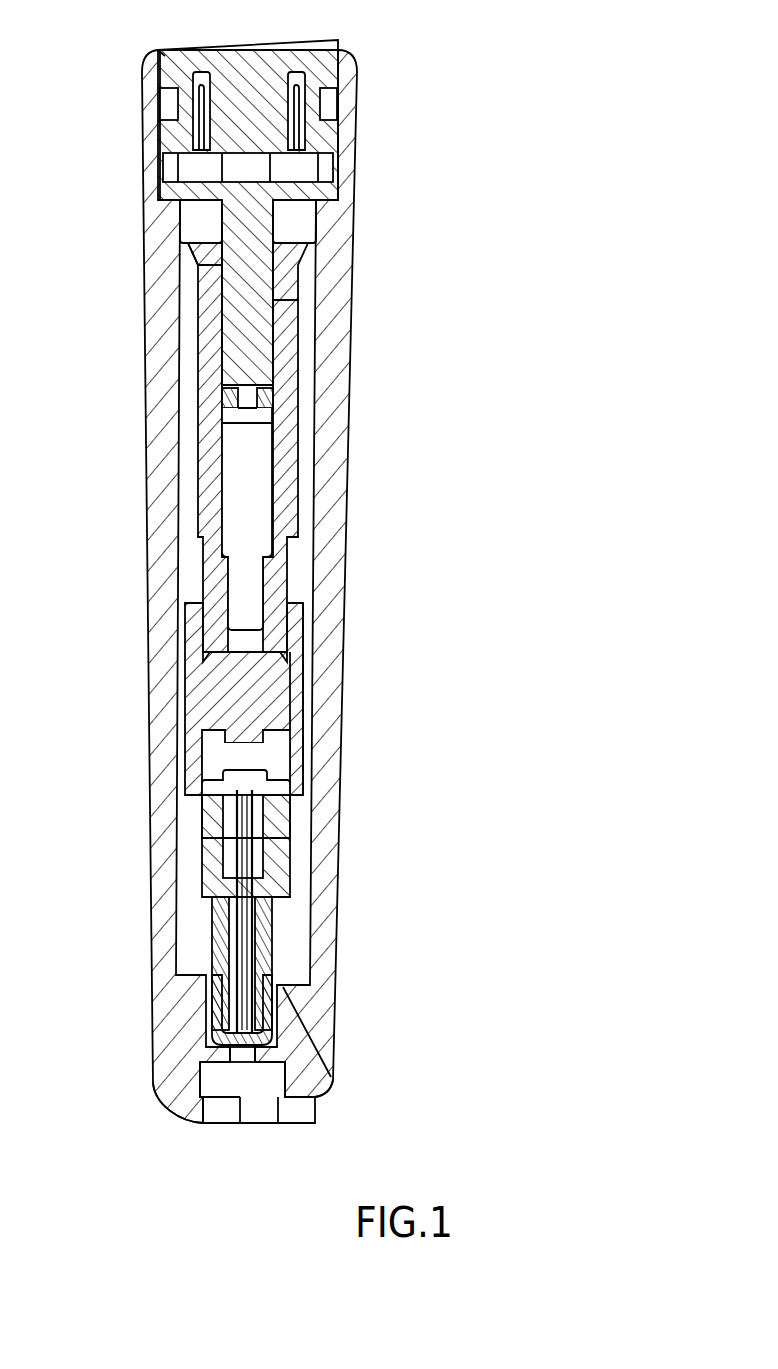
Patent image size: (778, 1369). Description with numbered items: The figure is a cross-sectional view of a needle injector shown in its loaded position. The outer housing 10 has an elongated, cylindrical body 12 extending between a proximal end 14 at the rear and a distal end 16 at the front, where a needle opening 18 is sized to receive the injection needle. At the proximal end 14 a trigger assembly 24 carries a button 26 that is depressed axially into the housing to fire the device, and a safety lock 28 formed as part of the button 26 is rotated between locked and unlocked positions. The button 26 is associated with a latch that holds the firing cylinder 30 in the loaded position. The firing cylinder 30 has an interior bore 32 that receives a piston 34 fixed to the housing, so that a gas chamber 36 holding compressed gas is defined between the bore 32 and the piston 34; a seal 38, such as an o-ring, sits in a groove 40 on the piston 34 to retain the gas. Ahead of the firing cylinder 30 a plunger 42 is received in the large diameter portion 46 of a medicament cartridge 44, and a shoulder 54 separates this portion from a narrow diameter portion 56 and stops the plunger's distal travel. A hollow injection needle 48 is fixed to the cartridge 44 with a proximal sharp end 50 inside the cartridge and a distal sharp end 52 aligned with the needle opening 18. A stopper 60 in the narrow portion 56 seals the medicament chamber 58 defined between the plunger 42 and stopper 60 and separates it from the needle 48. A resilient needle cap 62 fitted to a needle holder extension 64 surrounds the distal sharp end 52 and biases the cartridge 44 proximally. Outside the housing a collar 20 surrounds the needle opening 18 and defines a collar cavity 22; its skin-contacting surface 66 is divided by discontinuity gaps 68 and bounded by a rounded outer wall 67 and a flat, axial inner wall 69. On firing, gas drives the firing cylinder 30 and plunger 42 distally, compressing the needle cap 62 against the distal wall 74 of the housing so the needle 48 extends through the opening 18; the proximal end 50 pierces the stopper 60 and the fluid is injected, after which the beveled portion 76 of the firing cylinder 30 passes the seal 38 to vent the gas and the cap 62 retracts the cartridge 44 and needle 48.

The outer housing 10 is at (340, 297).
The body 12 is at (150, 521).
The proximal end 14 is at (355, 135).
The distal end 16 is at (322, 1020).
The needle opening 18 is at (155, 1081).
The collar 20 is at (297, 1116).
The collar cavity 22 is at (275, 1077).
The trigger assembly 24 is at (160, 58).
The button 26 is at (250, 72).
The safety lock 28 is at (345, 44).
The firing cylinder 30 is at (203, 312).
The interior bore 32 is at (258, 516).
The piston 34 is at (200, 246).
The gas chamber 36 is at (232, 437).
The seal 38 is at (265, 403).
The groove 40 is at (236, 398).
The plunger 42 is at (215, 690).
The medicament cartridge 44 is at (287, 813).
The large diameter portion 46 is at (218, 752).
The hollow injection needle 48 is at (236, 977).
The proximal sharp end 50 is at (232, 808).
The distal sharp end 52 is at (215, 1042).
The shoulder 54 is at (300, 793).
The narrow diameter portion 56 is at (262, 853).
The medicament chamber 58 is at (285, 746).
The stopper 60 is at (226, 840).
The needle cap 62 is at (266, 945).
The needle holder extension 64 is at (240, 930).
The skin-contacting surface 66 is at (253, 1127).
The outer wall 67 is at (292, 1126).
The discontinuity gaps 68 is at (217, 1118).
The inner wall 69 is at (203, 1123).
The distal wall 74 is at (302, 1049).
The beveled portion 76 is at (285, 248).